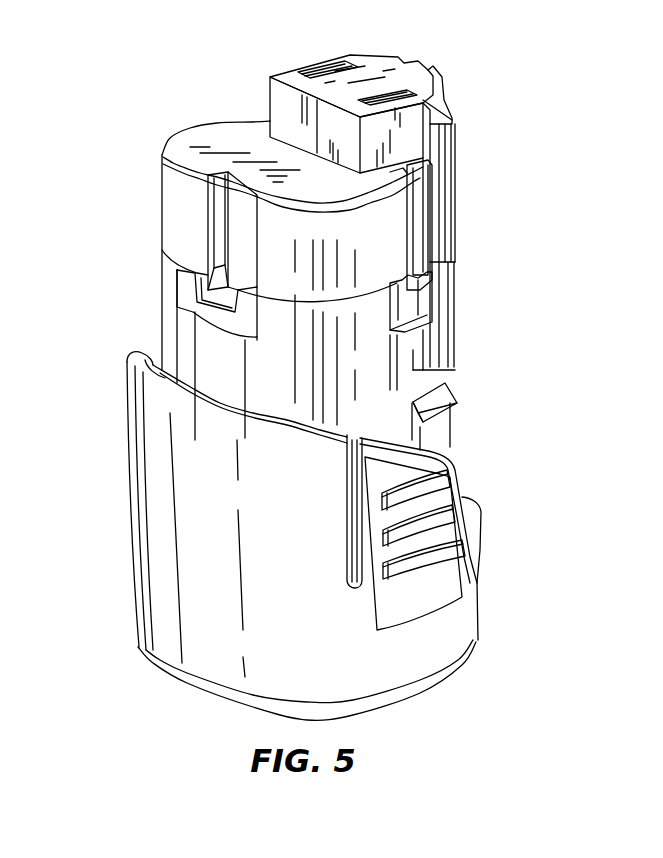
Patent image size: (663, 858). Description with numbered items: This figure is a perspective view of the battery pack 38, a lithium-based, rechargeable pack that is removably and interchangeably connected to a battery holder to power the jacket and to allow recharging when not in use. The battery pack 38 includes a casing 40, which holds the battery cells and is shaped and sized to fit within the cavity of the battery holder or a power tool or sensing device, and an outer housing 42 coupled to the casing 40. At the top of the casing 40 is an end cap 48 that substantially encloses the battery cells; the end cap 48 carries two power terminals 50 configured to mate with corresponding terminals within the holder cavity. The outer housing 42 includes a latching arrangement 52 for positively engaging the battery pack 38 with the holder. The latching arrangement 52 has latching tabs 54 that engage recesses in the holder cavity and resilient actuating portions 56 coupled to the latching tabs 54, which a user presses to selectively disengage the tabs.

The battery pack 38 is at (520, 235).
The casing 40 is at (372, 368).
The outer housing 42 is at (158, 525).
The end cap 48 is at (190, 210).
The power terminals 50 is at (332, 62).
The latching arrangement 52 is at (497, 482).
The latching tabs 54 is at (440, 420).
The resilient actuating portions 56 is at (427, 580).